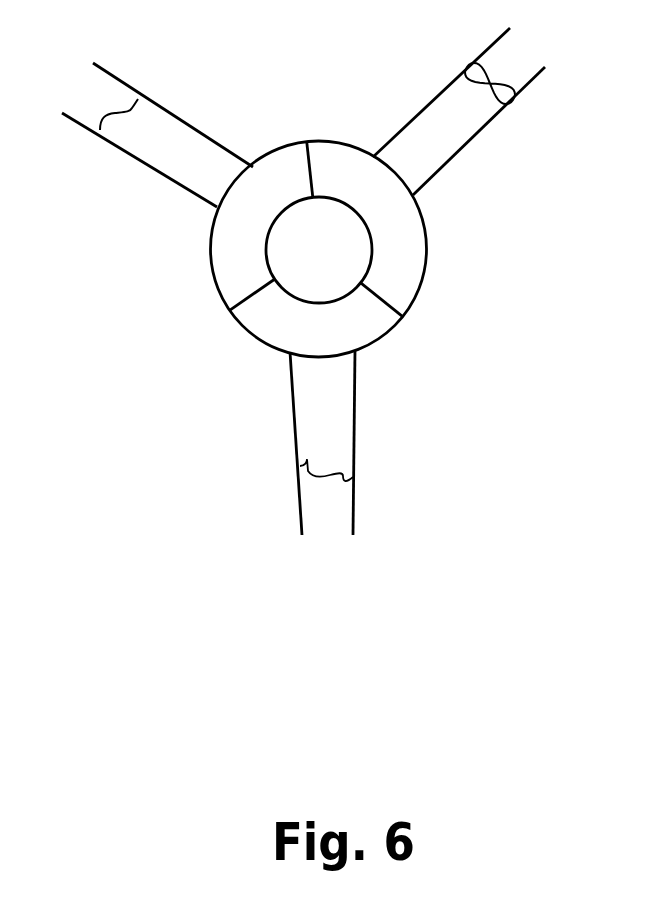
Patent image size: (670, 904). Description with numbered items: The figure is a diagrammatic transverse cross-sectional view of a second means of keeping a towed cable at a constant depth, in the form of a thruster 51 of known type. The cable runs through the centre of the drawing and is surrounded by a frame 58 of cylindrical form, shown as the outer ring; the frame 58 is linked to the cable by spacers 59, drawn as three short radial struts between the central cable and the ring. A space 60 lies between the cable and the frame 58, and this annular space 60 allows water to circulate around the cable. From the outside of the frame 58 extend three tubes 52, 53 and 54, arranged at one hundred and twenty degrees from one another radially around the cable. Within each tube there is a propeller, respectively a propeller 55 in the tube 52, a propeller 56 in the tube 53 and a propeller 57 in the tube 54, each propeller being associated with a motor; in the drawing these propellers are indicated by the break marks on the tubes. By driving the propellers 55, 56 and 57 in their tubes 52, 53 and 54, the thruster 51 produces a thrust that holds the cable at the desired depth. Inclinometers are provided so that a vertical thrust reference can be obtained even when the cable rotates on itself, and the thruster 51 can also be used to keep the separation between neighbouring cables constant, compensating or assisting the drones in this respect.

The thruster 51 is at (356, 422).
The tube 52 is at (298, 502).
The tube 53 is at (157, 154).
The tube 54 is at (438, 93).
The propeller 55 is at (300, 466).
The propeller 56 is at (120, 110).
The propeller 57 is at (515, 86).
The frame 58 is at (222, 281).
The spacer 59 is at (312, 176).
The space 60 is at (410, 232).